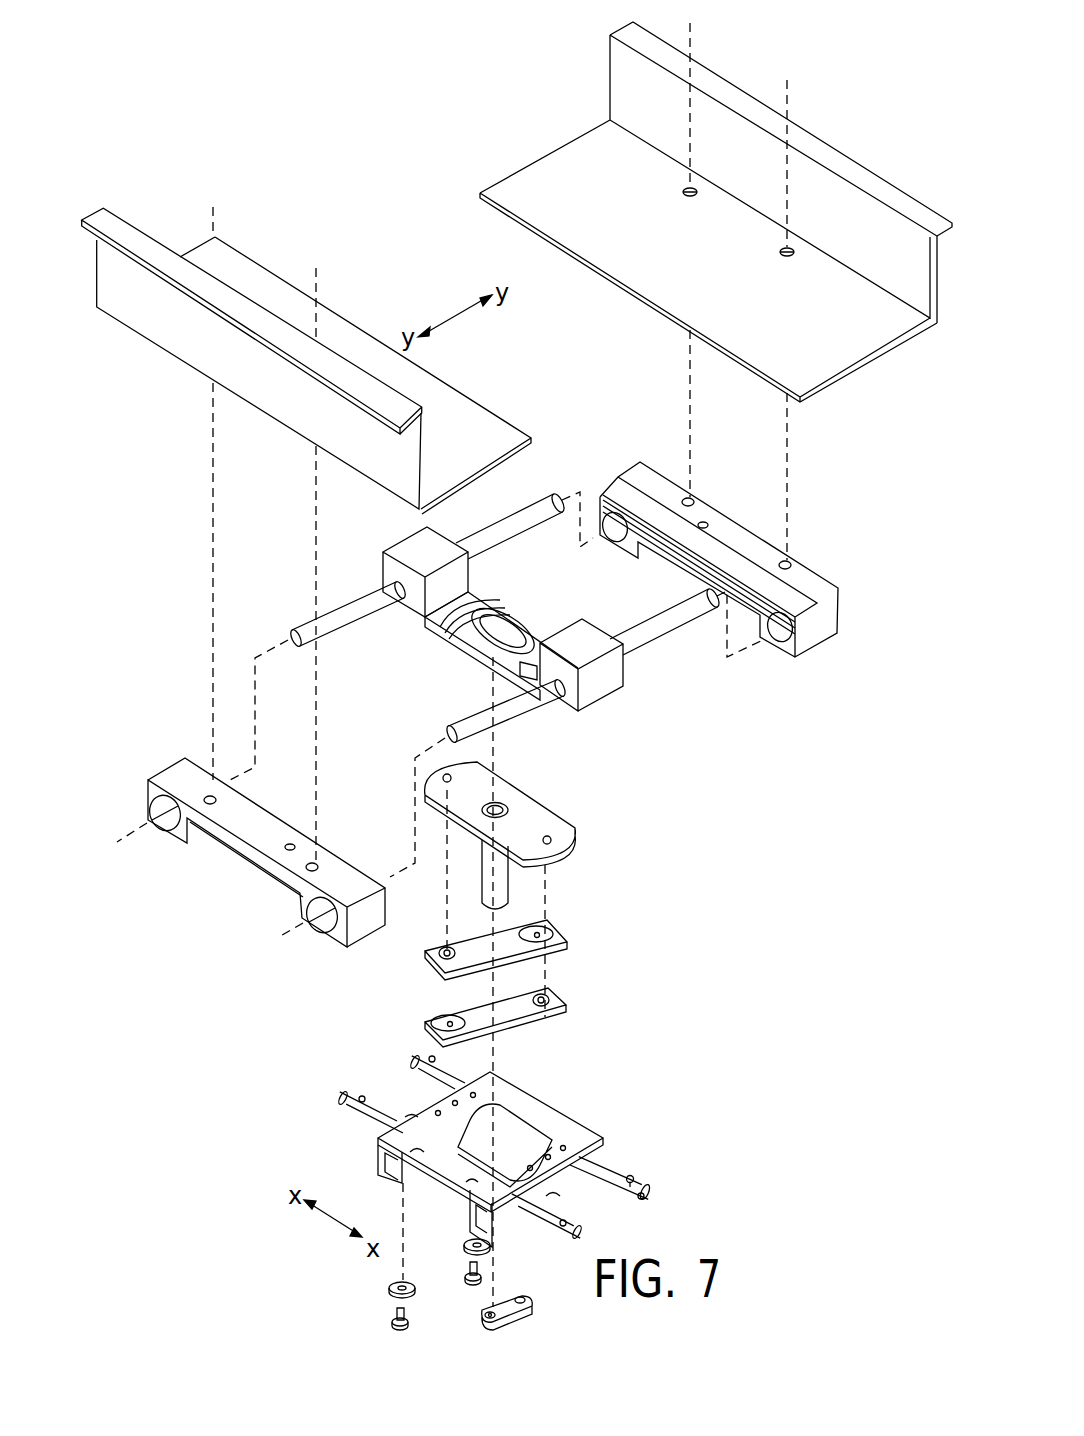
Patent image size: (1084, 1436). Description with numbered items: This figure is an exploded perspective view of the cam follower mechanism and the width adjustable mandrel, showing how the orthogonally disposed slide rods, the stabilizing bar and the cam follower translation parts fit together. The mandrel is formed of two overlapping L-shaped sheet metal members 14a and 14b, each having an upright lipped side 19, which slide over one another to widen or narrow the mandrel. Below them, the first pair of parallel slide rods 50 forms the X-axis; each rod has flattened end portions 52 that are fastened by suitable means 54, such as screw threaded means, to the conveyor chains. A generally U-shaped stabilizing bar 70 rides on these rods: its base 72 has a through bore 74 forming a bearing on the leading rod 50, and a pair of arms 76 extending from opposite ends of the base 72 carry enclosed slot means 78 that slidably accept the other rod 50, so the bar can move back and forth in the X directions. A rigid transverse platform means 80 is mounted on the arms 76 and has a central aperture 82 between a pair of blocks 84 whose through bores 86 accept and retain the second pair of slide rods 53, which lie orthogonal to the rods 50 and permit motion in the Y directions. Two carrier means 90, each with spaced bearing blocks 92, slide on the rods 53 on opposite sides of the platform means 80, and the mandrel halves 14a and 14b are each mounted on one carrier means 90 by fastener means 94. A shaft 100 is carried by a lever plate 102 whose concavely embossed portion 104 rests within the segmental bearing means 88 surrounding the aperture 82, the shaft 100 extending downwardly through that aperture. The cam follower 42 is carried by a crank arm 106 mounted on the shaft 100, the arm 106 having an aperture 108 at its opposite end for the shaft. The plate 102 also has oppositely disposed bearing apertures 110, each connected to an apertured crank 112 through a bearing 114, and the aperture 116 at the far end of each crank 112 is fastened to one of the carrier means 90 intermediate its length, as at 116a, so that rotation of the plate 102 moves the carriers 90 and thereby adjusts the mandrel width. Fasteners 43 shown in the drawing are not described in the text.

The L-shaped sheet metal member 14a is at (720, 307).
The L-shaped sheet metal member 14b is at (270, 307).
The upright lipped side 19 is at (292, 416).
The slide rod 53 is at (533, 512).
The block 84 is at (443, 550).
The through bore 86 is at (397, 580).
The segmental bearing means 88 is at (500, 603).
The central aperture 82 is at (520, 623).
The platform means 80 is at (440, 648).
The carrier means 90 is at (757, 540).
The bearing block 92 is at (603, 495).
The fastener means 94 is at (693, 500).
The fastening location on carrier 116a is at (670, 553).
The bearing aperture 110 is at (447, 778).
The concave embossment 104 is at (518, 805).
The lever plate 102 is at (558, 825).
The shaft 100 is at (480, 898).
The aperture 116 is at (545, 933).
The bearing 114 is at (440, 952).
The crank arm 112 is at (473, 967).
The arm 76 is at (415, 1120).
The flattened end portion 52 is at (360, 1102).
The base 72 is at (500, 1090).
The stabilizing bar 70 is at (495, 1148).
The through bore 74 is at (597, 1163).
The slide rod 50 is at (620, 1157).
The fastening means 54 is at (635, 1177).
The enclosed slot means 78 is at (417, 1185).
The fastener 43 is at (467, 1242).
The crank arm 106 is at (510, 1300).
The aperture 108 is at (480, 1307).
The cam follower 42 is at (503, 1312).